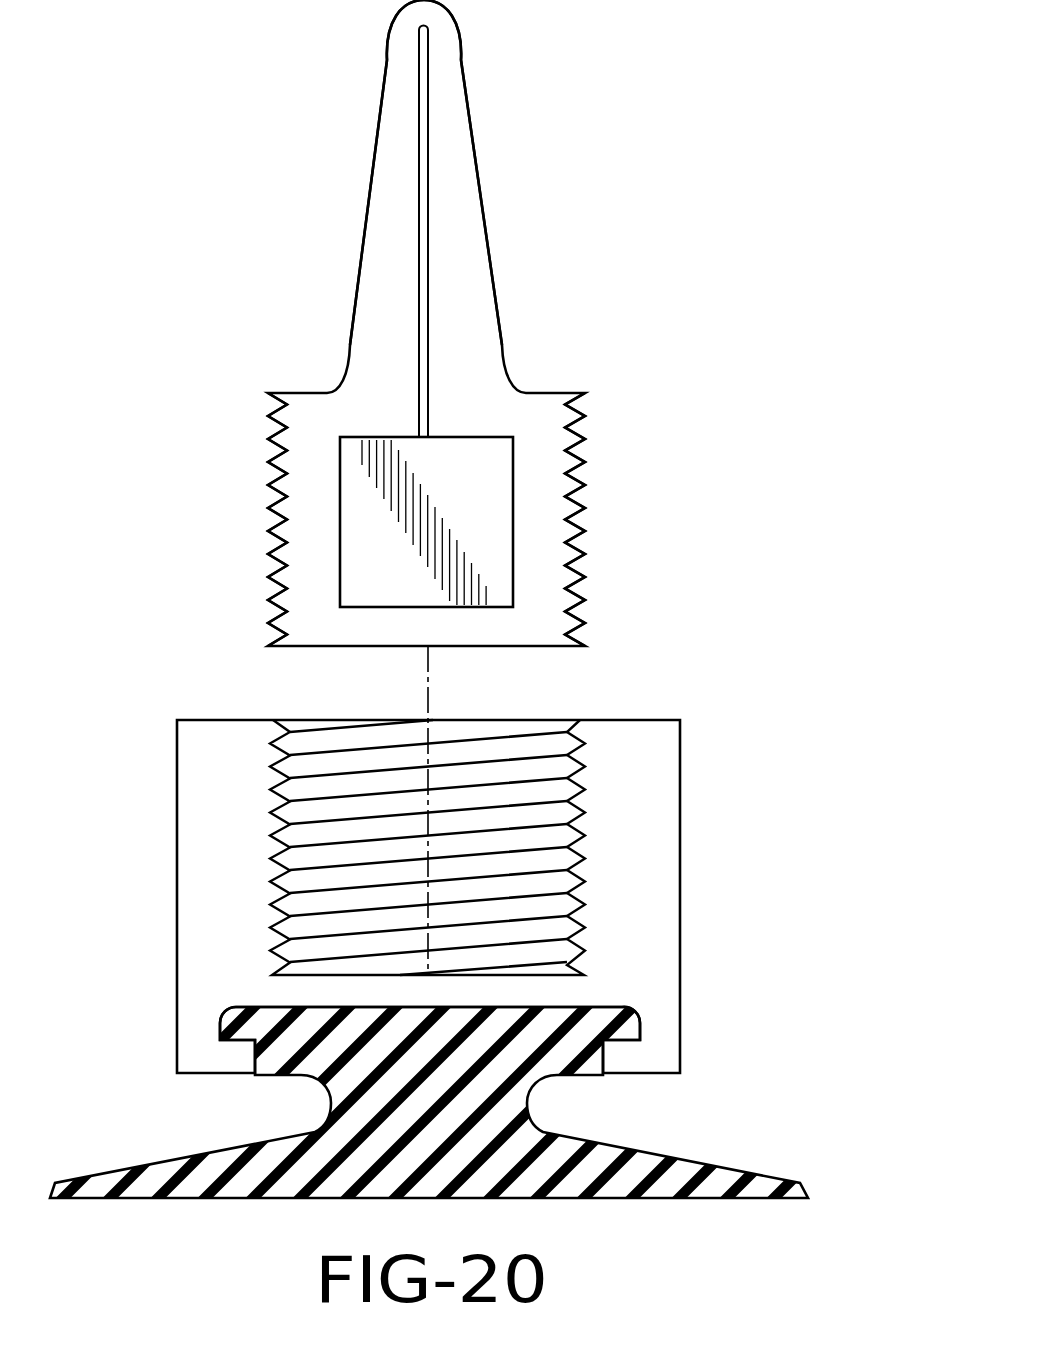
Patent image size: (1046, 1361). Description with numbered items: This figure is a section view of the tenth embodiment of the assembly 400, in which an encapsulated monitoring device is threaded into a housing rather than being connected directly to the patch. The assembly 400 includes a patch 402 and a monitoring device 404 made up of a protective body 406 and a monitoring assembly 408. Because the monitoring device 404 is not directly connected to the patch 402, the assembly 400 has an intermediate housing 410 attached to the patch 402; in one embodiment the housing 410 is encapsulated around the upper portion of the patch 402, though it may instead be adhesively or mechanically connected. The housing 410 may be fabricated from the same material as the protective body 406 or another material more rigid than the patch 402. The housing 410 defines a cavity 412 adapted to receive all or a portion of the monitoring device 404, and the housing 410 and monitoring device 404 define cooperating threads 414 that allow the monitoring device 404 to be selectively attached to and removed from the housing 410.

The assembly 400 is at (695, 270).
The patch 402 is at (705, 1152).
The monitoring device 404 is at (598, 452).
The protective body 406 is at (458, 188).
The monitoring assembly 408 is at (508, 530).
The intermediate housing 410 is at (489, 859).
The cavity 412 is at (547, 790).
The cooperating threads 414 is at (584, 592).